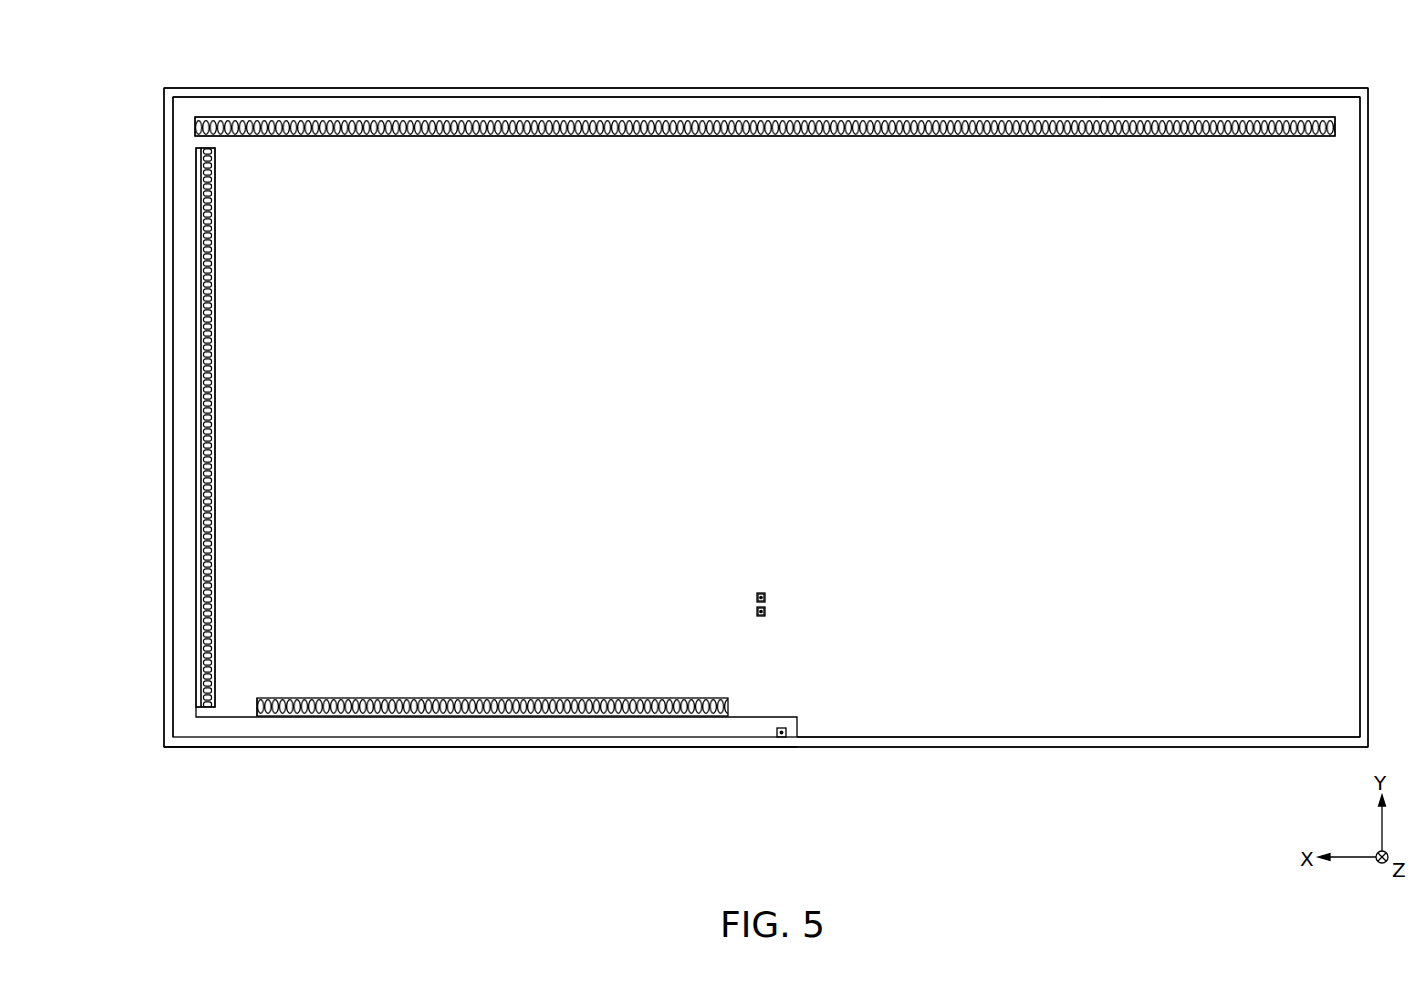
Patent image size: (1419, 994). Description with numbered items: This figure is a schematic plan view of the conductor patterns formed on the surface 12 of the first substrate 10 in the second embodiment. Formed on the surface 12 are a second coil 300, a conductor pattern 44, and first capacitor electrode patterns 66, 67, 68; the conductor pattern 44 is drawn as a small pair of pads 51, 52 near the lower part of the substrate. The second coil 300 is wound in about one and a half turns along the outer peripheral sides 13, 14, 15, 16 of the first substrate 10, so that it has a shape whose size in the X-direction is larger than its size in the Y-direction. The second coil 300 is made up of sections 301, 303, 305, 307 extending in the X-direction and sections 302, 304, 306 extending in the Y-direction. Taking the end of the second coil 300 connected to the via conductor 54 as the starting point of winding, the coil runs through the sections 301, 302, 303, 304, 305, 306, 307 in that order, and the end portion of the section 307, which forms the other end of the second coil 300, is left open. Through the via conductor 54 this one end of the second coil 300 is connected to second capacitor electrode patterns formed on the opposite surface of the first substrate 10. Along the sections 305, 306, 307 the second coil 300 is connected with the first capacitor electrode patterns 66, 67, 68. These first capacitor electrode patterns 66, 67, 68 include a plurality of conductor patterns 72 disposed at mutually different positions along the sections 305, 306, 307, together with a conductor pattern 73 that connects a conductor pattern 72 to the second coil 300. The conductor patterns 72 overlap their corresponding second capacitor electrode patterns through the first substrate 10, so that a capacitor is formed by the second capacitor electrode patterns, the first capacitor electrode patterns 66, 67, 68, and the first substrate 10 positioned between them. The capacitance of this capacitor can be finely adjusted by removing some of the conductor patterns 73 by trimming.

The first substrate 10 is at (1333, 84).
The surface 12 is at (1270, 108).
The outer peripheral side 13 is at (995, 748).
The outer peripheral side 14 is at (164, 388).
The outer peripheral side 15 is at (500, 88).
The outer peripheral side 16 is at (1369, 390).
The conductor pattern 44 is at (757, 600).
The first terminal 51 is at (765, 596).
The second terminal 52 is at (765, 612).
The via conductor 54 is at (782, 738).
The first capacitor electrode pattern 66 is at (557, 680).
The first capacitor electrode pattern 67 is at (217, 427).
The first capacitor electrode pattern 68 is at (557, 152).
The conductor pattern 72 is at (258, 698).
The conductor pattern 73 is at (257, 714).
The second coil 300 is at (1352, 243).
The section 301 is at (411, 747).
The section 302 is at (173, 339).
The section 303 is at (774, 97).
The section 304 is at (1360, 418).
The section 305 is at (1068, 736).
The section 306 is at (196, 243).
The section 307 is at (917, 117).